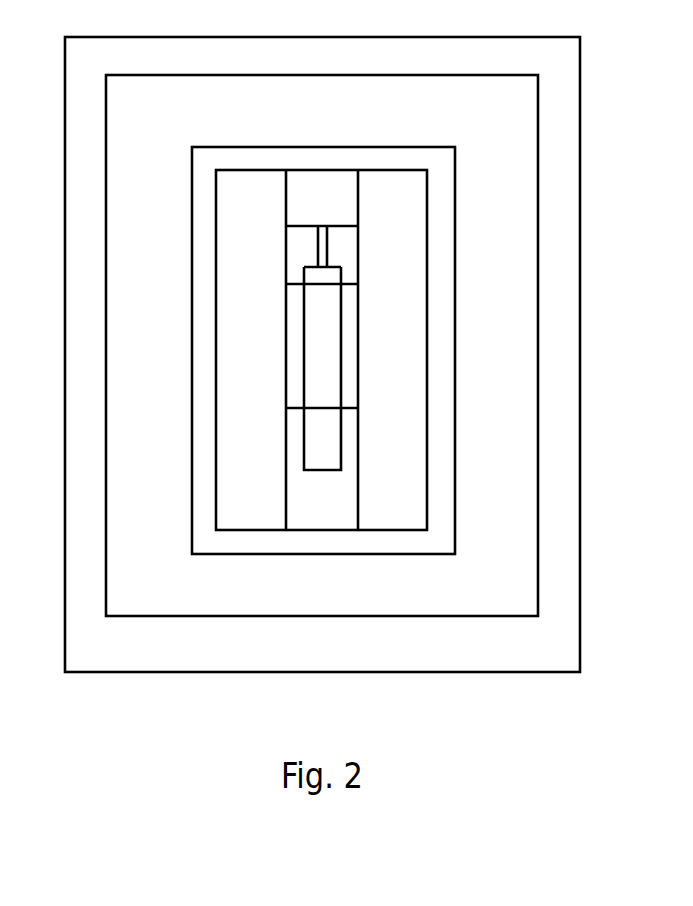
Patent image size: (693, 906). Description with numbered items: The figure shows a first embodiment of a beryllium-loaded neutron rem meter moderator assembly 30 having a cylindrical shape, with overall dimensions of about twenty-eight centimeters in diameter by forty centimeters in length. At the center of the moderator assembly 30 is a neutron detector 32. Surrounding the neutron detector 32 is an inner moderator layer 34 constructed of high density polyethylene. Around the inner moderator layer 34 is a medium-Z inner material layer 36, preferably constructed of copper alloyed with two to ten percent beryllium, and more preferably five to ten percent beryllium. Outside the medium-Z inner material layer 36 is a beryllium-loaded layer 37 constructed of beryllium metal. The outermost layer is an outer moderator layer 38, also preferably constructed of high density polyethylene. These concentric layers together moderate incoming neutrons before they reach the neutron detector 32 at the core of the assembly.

The moderator assembly 30 is at (505, 672).
The neutron detector 32 is at (323, 312).
The inner moderator layer 34 is at (395, 369).
The medium-Z inner material layer 36 is at (442, 427).
The beryllium-loaded layer 37 is at (493, 496).
The outer moderator layer 38 is at (554, 544).